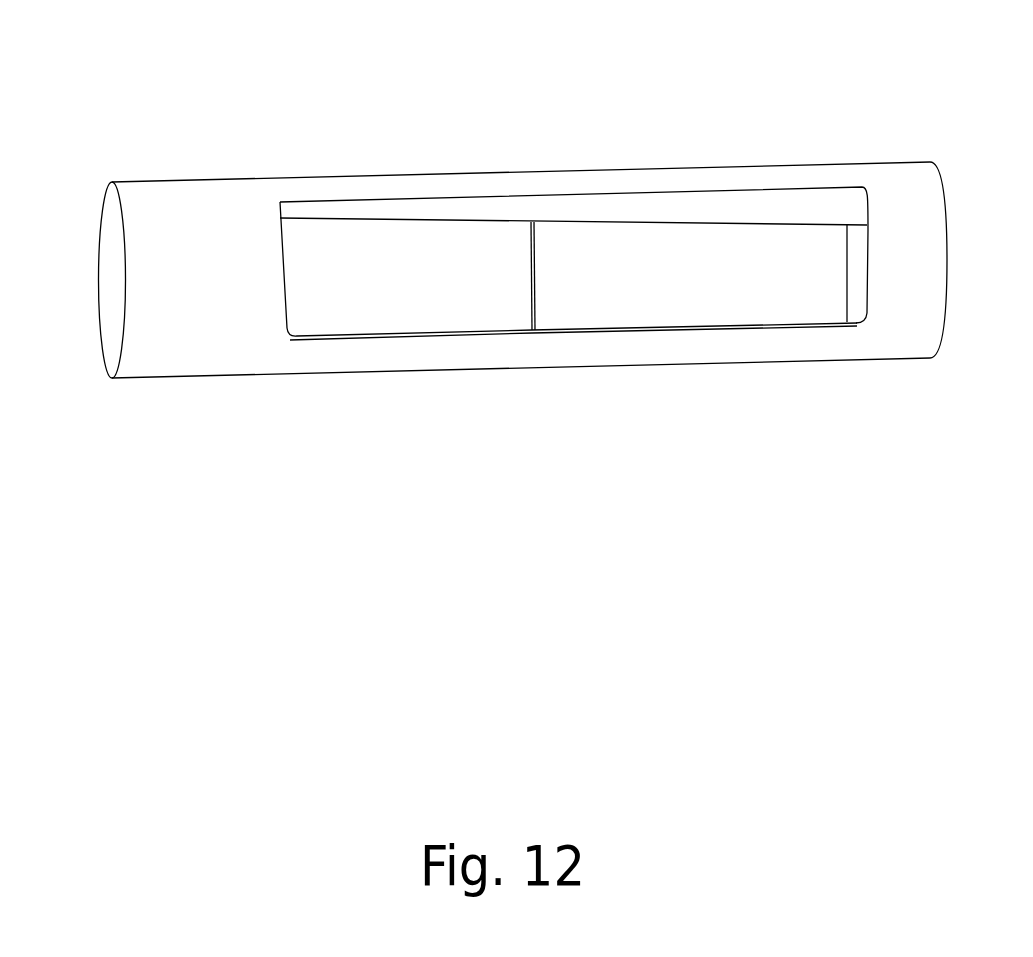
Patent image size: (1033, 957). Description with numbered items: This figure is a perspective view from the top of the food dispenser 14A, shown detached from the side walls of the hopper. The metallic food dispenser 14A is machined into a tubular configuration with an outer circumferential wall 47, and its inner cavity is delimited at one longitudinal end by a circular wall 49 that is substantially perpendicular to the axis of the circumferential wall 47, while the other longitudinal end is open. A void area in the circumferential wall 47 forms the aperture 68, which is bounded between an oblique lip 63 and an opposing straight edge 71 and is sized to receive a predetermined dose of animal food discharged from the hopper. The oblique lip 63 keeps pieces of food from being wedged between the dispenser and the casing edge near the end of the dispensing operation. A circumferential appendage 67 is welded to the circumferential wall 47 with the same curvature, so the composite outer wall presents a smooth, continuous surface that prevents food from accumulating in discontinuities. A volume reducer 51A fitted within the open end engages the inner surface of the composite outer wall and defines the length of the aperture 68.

The food dispenser 14A is at (618, 168).
The outer circumferential wall 47 is at (145, 182).
The circular wall 49 is at (855, 268).
The volume reducer 51A is at (462, 253).
The oblique lip 63 is at (452, 220).
The circumferential appendage 67 is at (807, 205).
The aperture 68 is at (575, 300).
The straight edge 71 is at (547, 332).